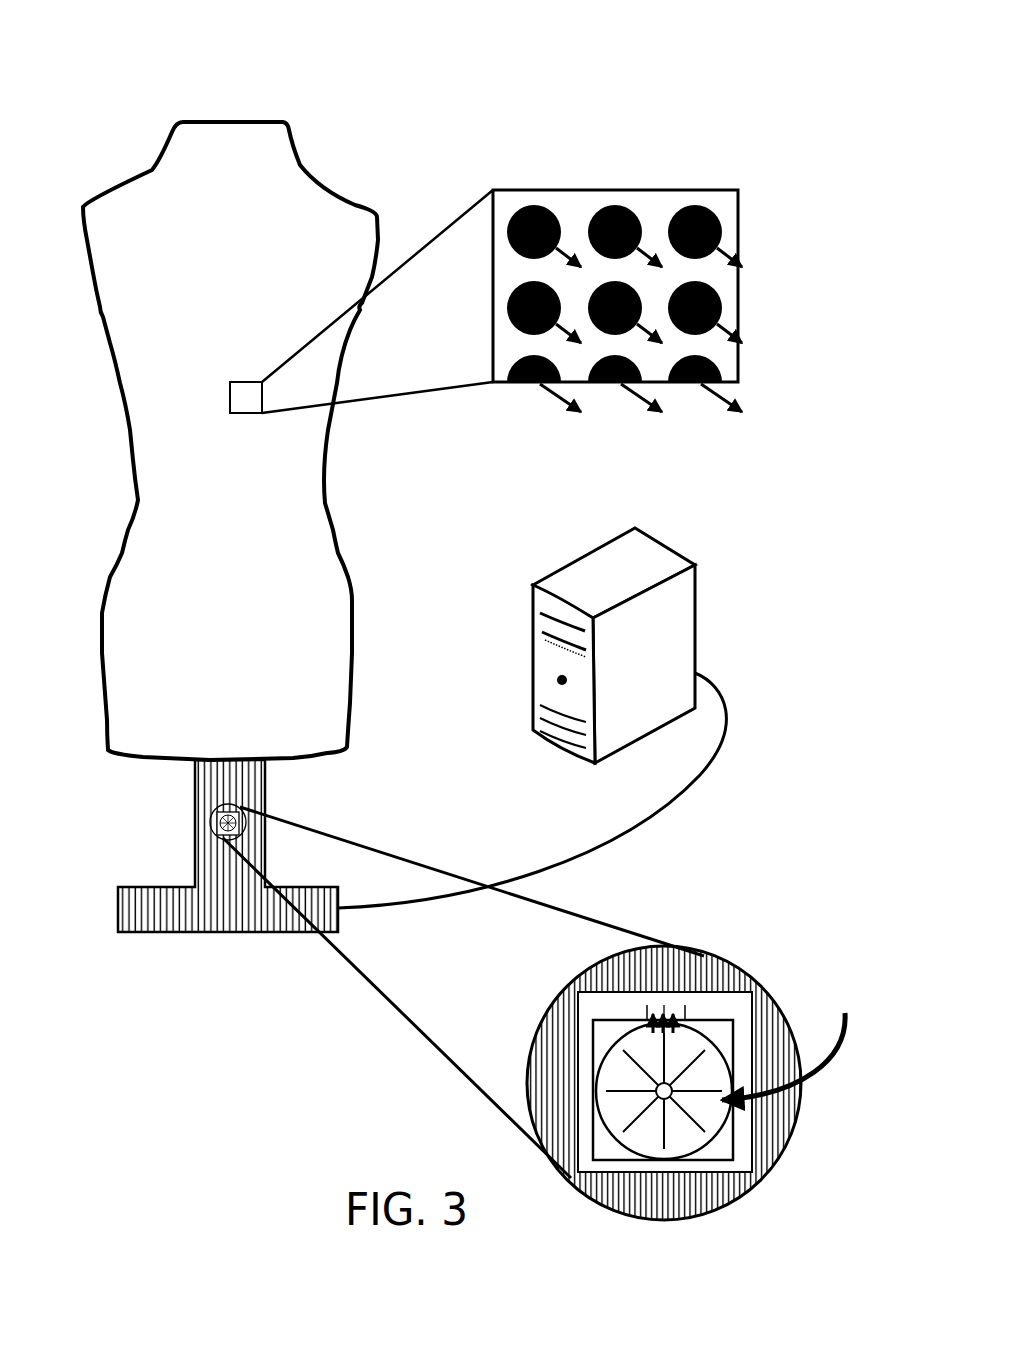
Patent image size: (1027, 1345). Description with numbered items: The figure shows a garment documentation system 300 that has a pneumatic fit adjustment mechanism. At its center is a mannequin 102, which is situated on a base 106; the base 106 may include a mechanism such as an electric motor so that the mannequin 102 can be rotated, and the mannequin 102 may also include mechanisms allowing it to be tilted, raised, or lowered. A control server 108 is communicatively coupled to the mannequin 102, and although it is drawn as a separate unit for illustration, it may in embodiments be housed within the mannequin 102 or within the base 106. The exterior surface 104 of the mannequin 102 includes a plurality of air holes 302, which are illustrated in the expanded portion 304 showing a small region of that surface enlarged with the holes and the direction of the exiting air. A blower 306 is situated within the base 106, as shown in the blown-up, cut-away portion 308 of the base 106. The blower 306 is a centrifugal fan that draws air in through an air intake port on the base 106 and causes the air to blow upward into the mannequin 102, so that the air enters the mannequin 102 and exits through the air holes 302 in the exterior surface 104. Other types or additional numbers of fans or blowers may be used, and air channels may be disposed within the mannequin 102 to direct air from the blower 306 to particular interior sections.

The garment documentation system 300 is at (115, 57).
The mannequin 102 is at (233, 120).
The exterior surface 104 is at (295, 202).
The base 106 is at (228, 932).
The control server 108 is at (675, 545).
The air holes 302 is at (710, 207).
The expanded portion 304 is at (530, 190).
The blower 306 is at (723, 1020).
The blown-up, cut-away portion 308 is at (713, 952).